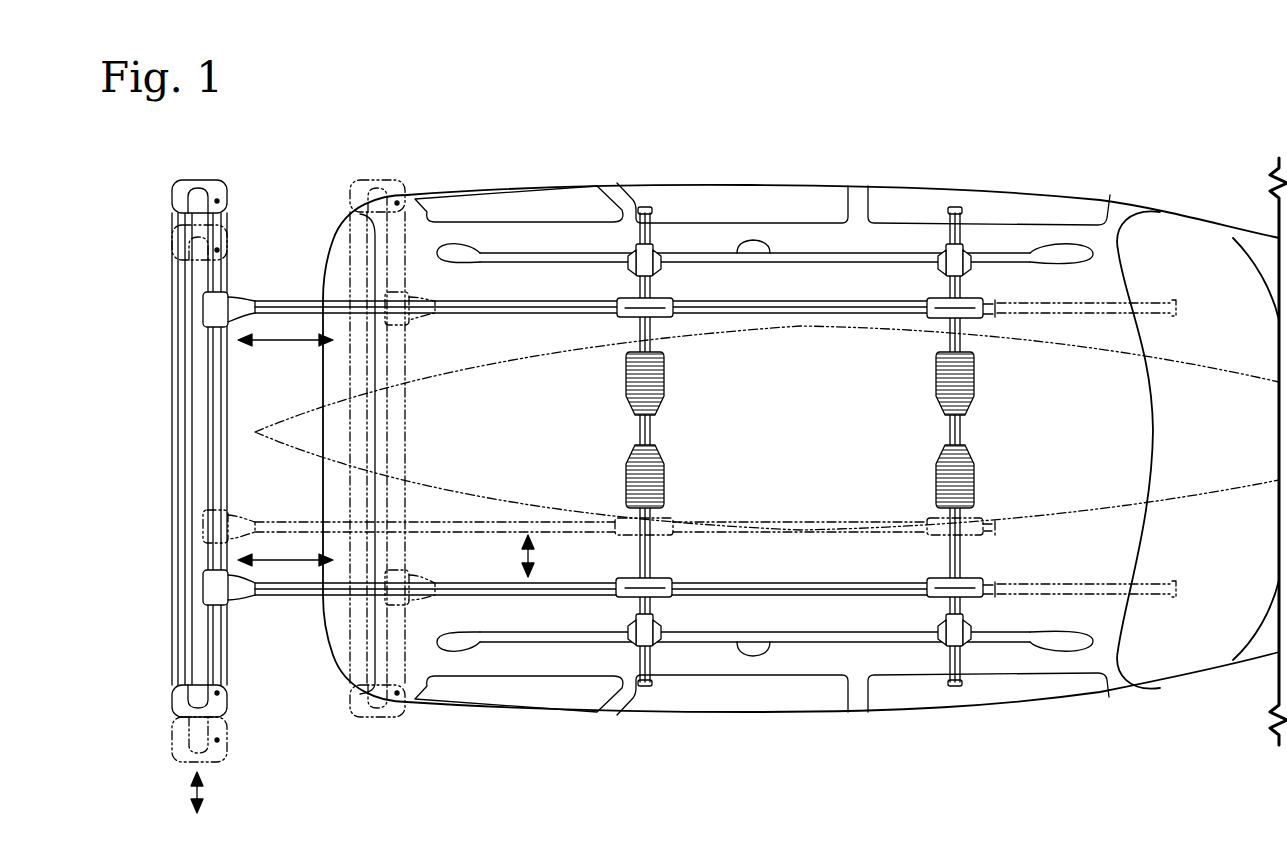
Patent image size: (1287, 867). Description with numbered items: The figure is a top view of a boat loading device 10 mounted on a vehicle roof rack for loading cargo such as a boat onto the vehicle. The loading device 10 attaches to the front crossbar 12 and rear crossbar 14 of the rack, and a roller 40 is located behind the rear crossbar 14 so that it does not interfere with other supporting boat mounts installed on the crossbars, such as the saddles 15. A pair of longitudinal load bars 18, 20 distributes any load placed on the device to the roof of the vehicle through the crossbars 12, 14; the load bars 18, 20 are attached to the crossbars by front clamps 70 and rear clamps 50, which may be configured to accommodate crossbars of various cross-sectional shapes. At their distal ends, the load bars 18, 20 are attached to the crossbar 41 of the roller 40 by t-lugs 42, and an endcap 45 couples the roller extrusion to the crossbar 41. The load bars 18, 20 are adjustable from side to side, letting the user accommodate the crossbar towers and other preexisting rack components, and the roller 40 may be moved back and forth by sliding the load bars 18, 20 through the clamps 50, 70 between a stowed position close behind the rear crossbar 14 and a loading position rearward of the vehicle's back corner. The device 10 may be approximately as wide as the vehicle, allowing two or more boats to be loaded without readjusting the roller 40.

The boat loading device 10 is at (920, 106).
The front crossbar 12 is at (968, 220).
The rear crossbar 14 is at (653, 228).
The saddles 15 is at (662, 384).
The longitudinal load bar 18 is at (813, 300).
The longitudinal load bar 20 is at (803, 595).
The roller 40 is at (172, 222).
The crossbar 41 is at (228, 223).
The t-lugs 42 is at (234, 300).
The endcap 45 is at (200, 180).
The rear clamps 50 is at (663, 297).
The front clamps 70 is at (970, 297).